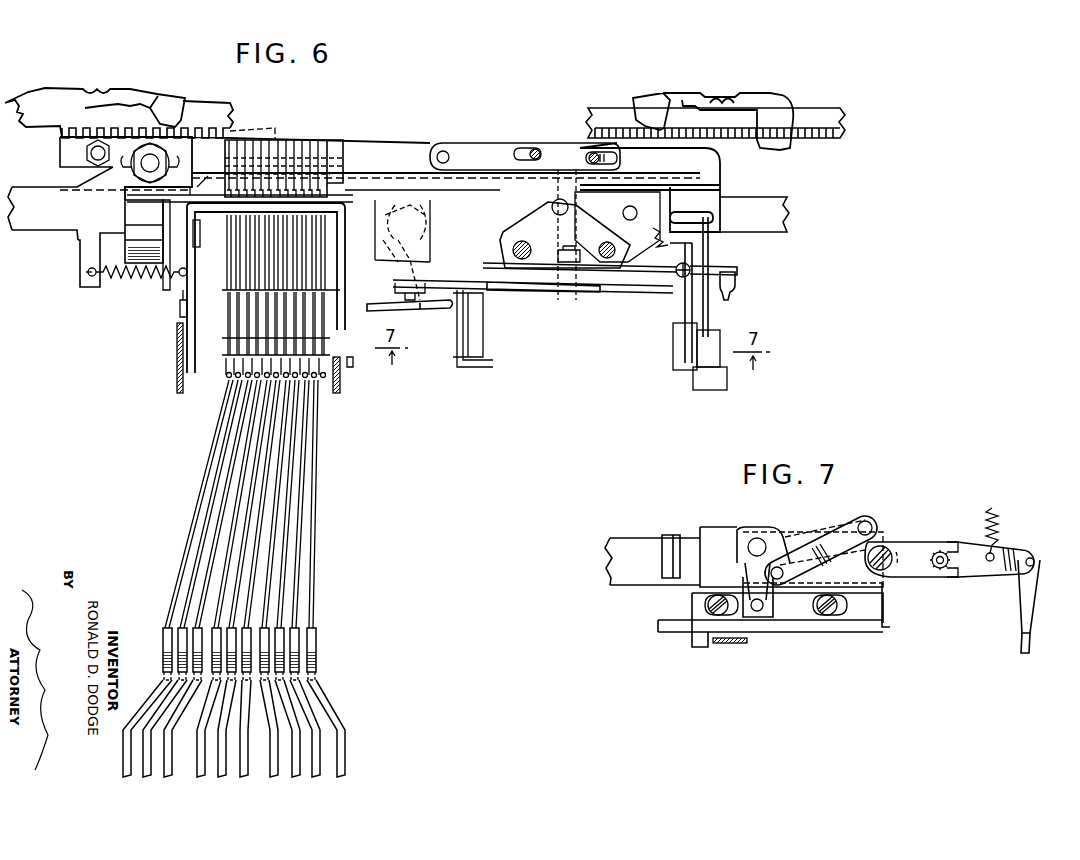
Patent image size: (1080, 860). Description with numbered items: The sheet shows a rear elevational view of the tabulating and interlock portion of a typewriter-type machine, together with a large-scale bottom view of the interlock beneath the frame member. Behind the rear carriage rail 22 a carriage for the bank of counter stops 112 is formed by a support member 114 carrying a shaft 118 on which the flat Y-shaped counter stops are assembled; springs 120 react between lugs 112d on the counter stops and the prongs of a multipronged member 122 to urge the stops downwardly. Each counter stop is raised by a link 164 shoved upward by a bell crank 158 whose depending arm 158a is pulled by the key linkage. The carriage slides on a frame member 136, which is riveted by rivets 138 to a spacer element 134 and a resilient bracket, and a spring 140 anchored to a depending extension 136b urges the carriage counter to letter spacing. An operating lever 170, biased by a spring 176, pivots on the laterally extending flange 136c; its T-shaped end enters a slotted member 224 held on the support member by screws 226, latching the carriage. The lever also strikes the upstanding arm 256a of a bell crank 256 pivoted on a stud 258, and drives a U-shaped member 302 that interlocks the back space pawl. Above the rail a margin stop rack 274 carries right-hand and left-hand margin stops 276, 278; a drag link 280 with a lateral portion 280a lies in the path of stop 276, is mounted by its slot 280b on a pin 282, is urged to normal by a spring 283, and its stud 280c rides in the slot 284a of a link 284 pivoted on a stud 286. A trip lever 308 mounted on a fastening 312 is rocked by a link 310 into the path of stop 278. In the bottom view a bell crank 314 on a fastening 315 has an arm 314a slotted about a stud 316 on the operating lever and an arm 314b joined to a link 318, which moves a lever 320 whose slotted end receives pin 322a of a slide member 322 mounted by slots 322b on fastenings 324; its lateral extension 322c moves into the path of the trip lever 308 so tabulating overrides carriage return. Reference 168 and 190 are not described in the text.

In FIG. 6, the rear carriage rail 22 is at (38, 187).
In FIG. 6, the counter stop 112 is at (225, 327).
In FIG. 6, the lug 112d is at (340, 353).
In FIG. 6, the support member 114 is at (180, 288).
In FIG. 6, the shaft 118 is at (223, 317).
In FIG. 6, the spring 120 is at (268, 378).
In FIG. 6, the multipronged member 122 is at (178, 367).
In FIG. 6, the spacer element 134 is at (551, 262).
In FIG. 6, the frame member 136 is at (590, 197).
In FIG. 6, the depending extension 136b is at (80, 242).
In FIG. 6, the laterally extending flange 136c is at (577, 277).
In FIG. 6, the rivets 138 is at (526, 262).
In FIG. 6, the spring 140 is at (113, 274).
In FIG. 6, the bell crank 158 is at (318, 661).
In FIG. 6, the depending arm 158a is at (343, 732).
In FIG. 6, the link 164 is at (320, 500).
In FIG. 6, the U bracket 168 is at (343, 276).
In FIG. 6, the operating lever 170 is at (625, 273).
In FIG. 6, the spring 176 is at (690, 270).
In FIG. 7, the spring 176 is at (997, 523).
In FIG. 6, the lever 190 is at (731, 298).
In FIG. 7, the lever 190 is at (1018, 645).
In FIG. 6, the slotted member 224 is at (197, 187).
In FIG. 6, the screws 226 is at (168, 276).
In FIG. 6, the bell crank 256 is at (682, 313).
In FIG. 6, the upstanding arm 256a is at (697, 243).
In FIG. 6, the stud 258 is at (673, 350).
In FIG. 6, the margin stop rack 274 is at (215, 112).
In FIG. 6, the right-hand margin stop 276 is at (70, 105).
In FIG. 6, the left-hand margin stop 278 is at (752, 97).
In FIG. 6, the drag link 280 is at (313, 136).
In FIG. 6, the lateral extending portion 280a is at (277, 128).
In FIG. 6, the longitudinally extending slot 280b is at (520, 148).
In FIG. 6, the rearwardly extending stud 280c is at (592, 153).
In FIG. 6, the pin 282 is at (534, 149).
In FIG. 6, the spring 283 is at (642, 218).
In FIG. 6, the link 284 is at (480, 143).
In FIG. 6, the longitudinally extending slot 284a is at (600, 185).
In FIG. 6, the stud 286 is at (445, 150).
In FIG. 6, the U-shaped member 302 is at (137, 257).
In FIG. 6, the clutch knockout or trip lever 308 is at (448, 312).
In FIG. 7, the clutch knockout or trip lever 308 is at (743, 646).
In FIG. 6, the link 310 is at (422, 312).
In FIG. 6, the stud-like fastening 312 is at (420, 228).
In FIG. 7, the bell crank 314 is at (892, 578).
In FIG. 7, the arm 314a is at (950, 579).
In FIG. 7, the arm 314b is at (878, 535).
In FIG. 7, the stud-like fastening 315 is at (892, 552).
In FIG. 7, the stud 316 is at (940, 552).
In FIG. 7, the link 318 is at (812, 550).
In FIG. 7, the lever 320 is at (780, 533).
In FIG. 7, the slide member 322 is at (808, 614).
In FIG. 7, the pin 322a is at (760, 608).
In FIG. 7, the longitudinally extending slots 322b is at (734, 610).
In FIG. 7, the lateral extension 322c is at (693, 640).
In FIG. 7, the stud-like fastenings 324 is at (707, 605).